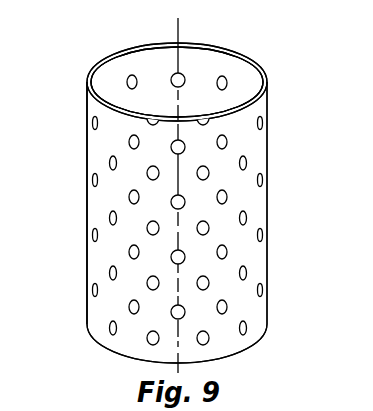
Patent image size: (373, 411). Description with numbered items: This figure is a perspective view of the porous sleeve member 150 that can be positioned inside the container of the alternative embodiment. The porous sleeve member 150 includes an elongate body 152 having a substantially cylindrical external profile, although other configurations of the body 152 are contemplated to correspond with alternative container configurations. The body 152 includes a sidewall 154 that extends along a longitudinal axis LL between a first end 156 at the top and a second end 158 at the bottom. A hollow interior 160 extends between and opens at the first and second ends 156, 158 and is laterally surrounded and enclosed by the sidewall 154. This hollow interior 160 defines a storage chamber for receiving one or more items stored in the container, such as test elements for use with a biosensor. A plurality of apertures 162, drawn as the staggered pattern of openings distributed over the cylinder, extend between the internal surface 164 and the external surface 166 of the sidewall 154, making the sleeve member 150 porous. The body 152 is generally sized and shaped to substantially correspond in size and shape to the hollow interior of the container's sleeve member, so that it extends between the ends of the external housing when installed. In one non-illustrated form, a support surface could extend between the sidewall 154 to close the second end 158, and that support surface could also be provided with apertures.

The porous sleeve member 150 is at (289, 192).
The elongate body 152 is at (86, 179).
The sidewall 154 is at (87, 82).
The first end 156 is at (268, 82).
The second end 158 is at (268, 325).
The hollow interior 160 is at (146, 81).
The apertures 162 is at (228, 197).
The internal surface 164 is at (245, 77).
The external surface 166 is at (118, 253).
The longitudinal axis LL is at (180, 35).